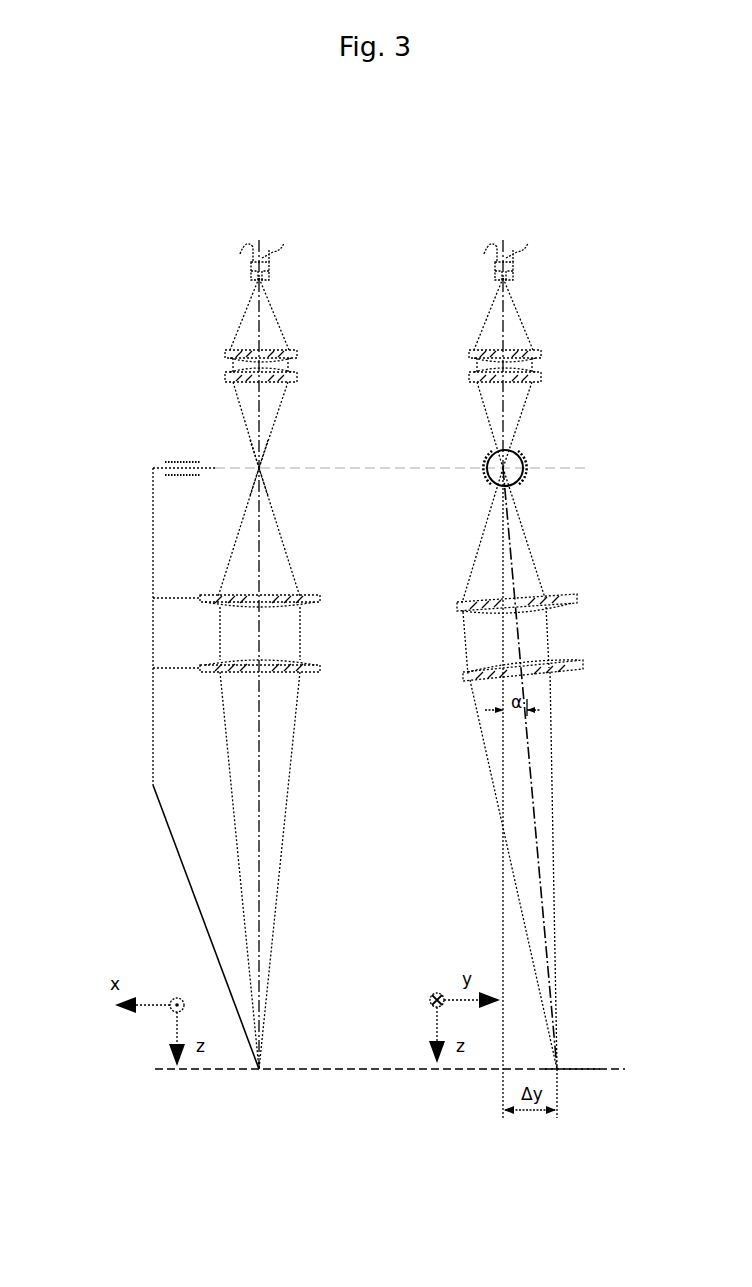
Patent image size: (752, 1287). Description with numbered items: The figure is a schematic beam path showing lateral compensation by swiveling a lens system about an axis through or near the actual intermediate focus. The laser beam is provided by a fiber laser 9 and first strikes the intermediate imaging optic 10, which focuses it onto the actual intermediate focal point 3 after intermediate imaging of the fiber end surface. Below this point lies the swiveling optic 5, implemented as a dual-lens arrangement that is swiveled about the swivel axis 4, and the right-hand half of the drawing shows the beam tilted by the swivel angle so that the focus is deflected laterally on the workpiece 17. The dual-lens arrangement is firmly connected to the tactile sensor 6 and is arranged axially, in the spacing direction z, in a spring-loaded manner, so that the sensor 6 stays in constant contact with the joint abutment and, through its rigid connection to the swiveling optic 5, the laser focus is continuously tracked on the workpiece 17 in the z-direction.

The fiber laser 9 is at (250, 268).
The intermediate imaging optic 10 is at (228, 376).
The swivel axis 4 is at (183, 462).
The actual intermediate focal point 3 is at (259, 468).
The swiveling optic 5 is at (207, 668).
The tactile sensor 6 is at (235, 1008).
The workpiece surface 17 is at (577, 1072).